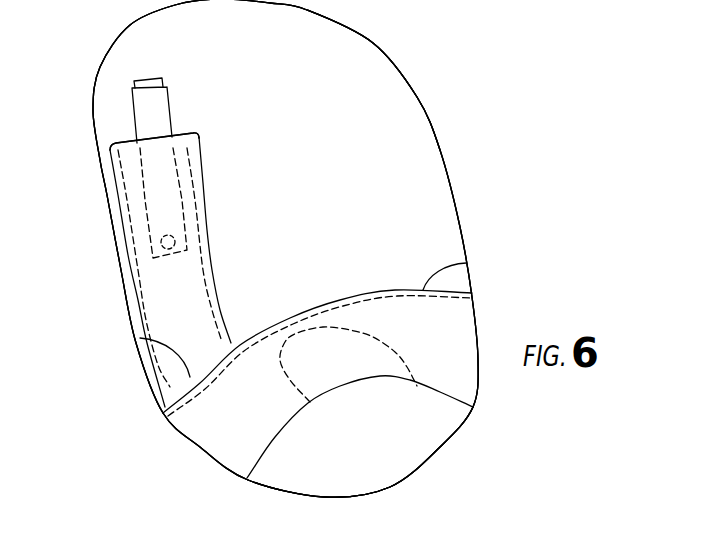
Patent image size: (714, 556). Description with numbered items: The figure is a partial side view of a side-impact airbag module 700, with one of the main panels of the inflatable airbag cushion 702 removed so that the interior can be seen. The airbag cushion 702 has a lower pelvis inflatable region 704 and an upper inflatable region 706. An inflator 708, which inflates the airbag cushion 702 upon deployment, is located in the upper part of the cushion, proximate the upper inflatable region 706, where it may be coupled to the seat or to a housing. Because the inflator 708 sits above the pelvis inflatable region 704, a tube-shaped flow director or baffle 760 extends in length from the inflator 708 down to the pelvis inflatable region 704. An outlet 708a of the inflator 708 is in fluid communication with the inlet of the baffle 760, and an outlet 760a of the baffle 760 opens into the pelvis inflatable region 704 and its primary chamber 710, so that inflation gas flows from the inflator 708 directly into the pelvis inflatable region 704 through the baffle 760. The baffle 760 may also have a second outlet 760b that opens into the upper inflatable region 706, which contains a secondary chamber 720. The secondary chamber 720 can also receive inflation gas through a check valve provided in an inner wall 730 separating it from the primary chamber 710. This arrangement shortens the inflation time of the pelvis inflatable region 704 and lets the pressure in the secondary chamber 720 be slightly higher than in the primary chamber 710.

The airbag module 700 is at (596, 177).
The airbag cushion 702 is at (458, 222).
The pelvis inflatable region 704 is at (506, 439).
The upper inflatable region 706 is at (434, 98).
The inflator 708 is at (145, 98).
The outlet of the inflator 708a is at (167, 228).
The primary chamber 710 is at (234, 431).
The secondary chamber 720 is at (289, 81).
The inner wall 730 is at (466, 263).
The baffle 760 is at (163, 303).
The outlet of the baffle 760a is at (140, 338).
The second outlet of the baffle 760b is at (128, 147).